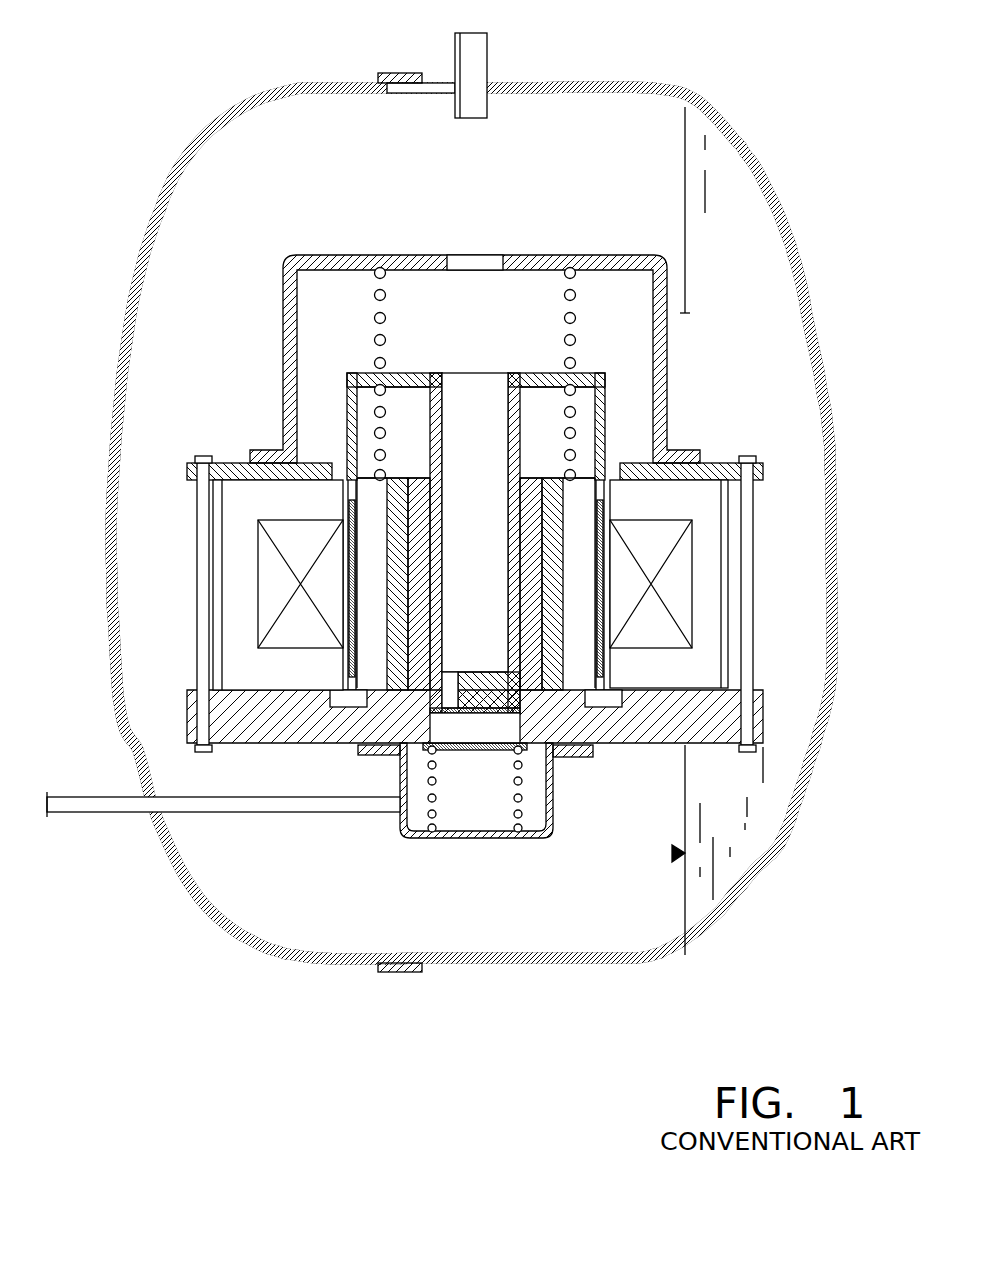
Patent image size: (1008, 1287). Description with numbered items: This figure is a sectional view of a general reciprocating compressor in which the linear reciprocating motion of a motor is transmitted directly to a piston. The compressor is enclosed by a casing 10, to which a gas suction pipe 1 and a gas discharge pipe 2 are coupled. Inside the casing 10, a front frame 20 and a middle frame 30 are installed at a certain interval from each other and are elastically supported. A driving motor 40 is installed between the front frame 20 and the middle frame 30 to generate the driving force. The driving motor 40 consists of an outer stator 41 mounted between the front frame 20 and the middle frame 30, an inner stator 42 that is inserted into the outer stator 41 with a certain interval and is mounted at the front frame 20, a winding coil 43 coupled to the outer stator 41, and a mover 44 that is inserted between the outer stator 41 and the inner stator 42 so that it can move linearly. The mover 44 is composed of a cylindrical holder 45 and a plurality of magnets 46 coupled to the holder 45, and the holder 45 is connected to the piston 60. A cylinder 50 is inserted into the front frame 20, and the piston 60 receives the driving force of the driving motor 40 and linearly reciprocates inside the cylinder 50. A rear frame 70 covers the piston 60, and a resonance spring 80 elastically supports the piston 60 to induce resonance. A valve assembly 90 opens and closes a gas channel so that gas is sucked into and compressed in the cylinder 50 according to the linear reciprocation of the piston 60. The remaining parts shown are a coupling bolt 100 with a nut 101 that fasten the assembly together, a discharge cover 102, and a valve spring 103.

The gas suction pipe 1 is at (453, 45).
The gas discharge pipe 2 is at (77, 806).
The casing 10 is at (207, 128).
The front frame 20 is at (709, 749).
The middle frame 30 is at (762, 484).
The driving motor 40 is at (364, 611).
The outer stator 41 is at (238, 650).
The inner stator 42 is at (382, 603).
The winding coil 43 is at (270, 570).
The mover 44 is at (346, 676).
The holder 45 is at (350, 423).
The magnets 46 is at (340, 547).
The cylinder 50 is at (542, 712).
The piston 60 is at (525, 650).
The rear frame 70 is at (687, 313).
The resonance spring 80 is at (577, 412).
The valve assembly 90 is at (537, 820).
The coupling bolt 100 is at (757, 462).
The nut 101 is at (760, 749).
The discharge cover 102 is at (468, 840).
The valve spring 103 is at (512, 828).